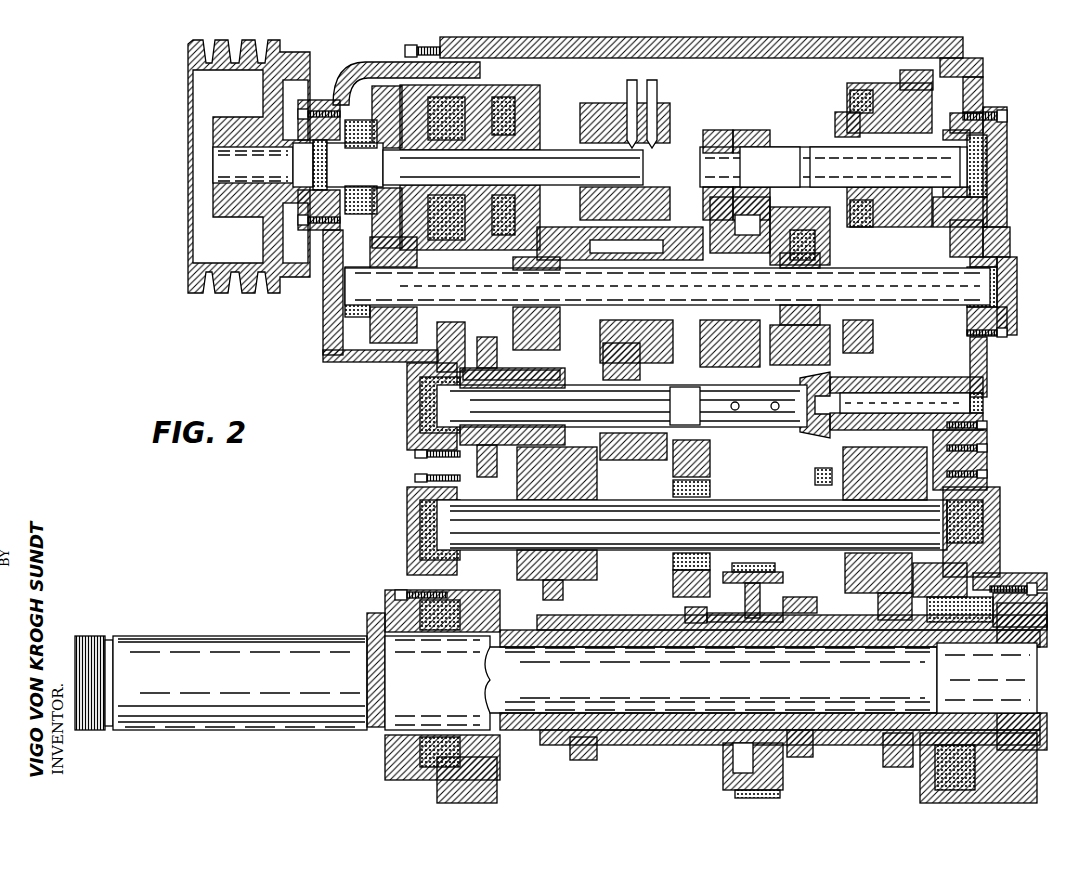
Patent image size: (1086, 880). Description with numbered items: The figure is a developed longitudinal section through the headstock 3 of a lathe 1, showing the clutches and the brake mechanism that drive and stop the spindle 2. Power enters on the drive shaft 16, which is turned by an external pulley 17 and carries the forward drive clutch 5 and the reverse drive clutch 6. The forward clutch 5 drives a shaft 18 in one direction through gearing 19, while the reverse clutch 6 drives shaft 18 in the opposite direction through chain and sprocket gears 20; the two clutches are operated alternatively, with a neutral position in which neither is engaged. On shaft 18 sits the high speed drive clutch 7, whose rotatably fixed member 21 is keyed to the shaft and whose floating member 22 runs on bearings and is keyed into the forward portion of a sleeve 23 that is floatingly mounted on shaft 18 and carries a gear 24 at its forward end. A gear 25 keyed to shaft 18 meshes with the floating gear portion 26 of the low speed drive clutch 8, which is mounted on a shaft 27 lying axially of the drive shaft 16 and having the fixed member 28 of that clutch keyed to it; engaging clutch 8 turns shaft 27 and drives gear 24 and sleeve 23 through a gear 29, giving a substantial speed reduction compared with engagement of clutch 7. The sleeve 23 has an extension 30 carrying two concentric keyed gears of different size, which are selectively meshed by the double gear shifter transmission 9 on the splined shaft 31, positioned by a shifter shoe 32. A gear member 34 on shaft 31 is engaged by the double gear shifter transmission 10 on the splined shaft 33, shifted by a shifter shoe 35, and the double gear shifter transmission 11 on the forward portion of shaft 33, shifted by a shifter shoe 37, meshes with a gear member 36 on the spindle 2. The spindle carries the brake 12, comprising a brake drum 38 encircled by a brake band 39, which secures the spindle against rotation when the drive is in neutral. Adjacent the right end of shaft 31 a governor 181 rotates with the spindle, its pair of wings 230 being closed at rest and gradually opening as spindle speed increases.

The lathe 1 is at (355, 471).
The spindle 2 is at (242, 633).
The headstock 3 is at (378, 61).
The forward drive clutch 5 is at (542, 86).
The reverse drive clutch 6 is at (391, 95).
The high speed drive clutch 7 is at (817, 349).
The low speed drive clutch 8 is at (835, 82).
The double gear shifter transmission 9 is at (612, 354).
The double gear shifter transmission 10 is at (560, 462).
The double gear shifter transmission 11 is at (845, 568).
The brake 12 is at (710, 780).
The drive shaft 16 is at (215, 168).
The external pulley 17 is at (251, 289).
The shaft 18 is at (490, 268).
The gearing 19 is at (548, 333).
The chain and sprocket gears 20 is at (375, 230).
The rotatably fixed member 21 is at (810, 248).
The floating member 22 is at (750, 222).
The sleeve 23 is at (730, 343).
The gear 24 is at (737, 208).
The gear 25 is at (905, 320).
The floating gear portion 26 is at (906, 72).
The shaft 27 is at (760, 128).
The fixed member 28 is at (845, 120).
The gear 29 is at (724, 128).
The extension 30 is at (604, 245).
The shaft 31 is at (435, 407).
The shifter shoe 32 is at (650, 460).
The splined shaft 33 is at (624, 548).
The gear member 34 is at (527, 433).
The shifter shoe 35 is at (585, 585).
The gear member 36 is at (855, 743).
The shifter shoe 37 is at (815, 476).
The brake drum 38 is at (783, 772).
The brake band 39 is at (782, 793).
The governor 181 is at (785, 446).
The wings 230 is at (858, 372).